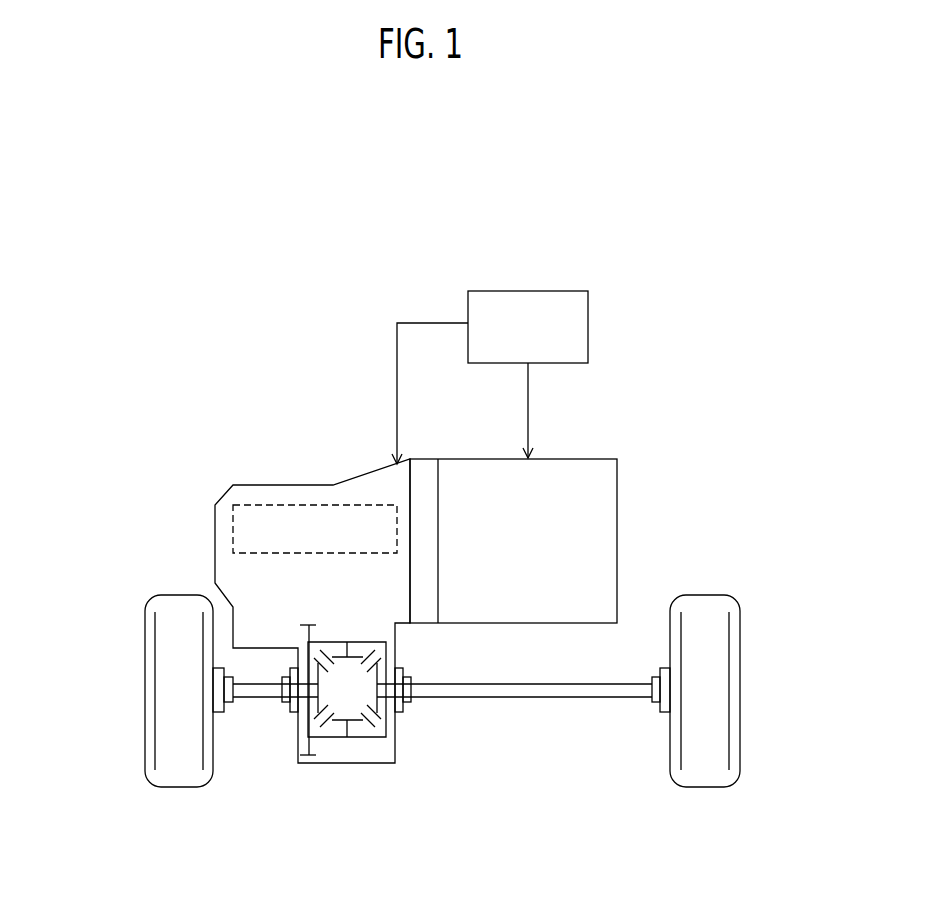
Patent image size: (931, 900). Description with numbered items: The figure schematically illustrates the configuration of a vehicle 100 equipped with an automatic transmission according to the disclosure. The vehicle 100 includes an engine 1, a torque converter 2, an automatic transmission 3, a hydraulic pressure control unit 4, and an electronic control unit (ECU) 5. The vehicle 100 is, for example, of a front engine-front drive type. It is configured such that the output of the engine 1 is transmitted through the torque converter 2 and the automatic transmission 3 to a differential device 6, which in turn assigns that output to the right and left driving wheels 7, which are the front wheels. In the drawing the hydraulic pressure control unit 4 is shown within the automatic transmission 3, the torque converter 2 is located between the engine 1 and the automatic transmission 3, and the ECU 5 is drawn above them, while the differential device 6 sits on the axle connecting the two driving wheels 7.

The vehicle 100 is at (657, 398).
The engine 1 is at (617, 492).
The torque converter 2 is at (425, 468).
The automatic transmission 3 is at (230, 567).
The hydraulic pressure control unit 4 is at (233, 528).
The electronic control unit (ECU) 5 is at (553, 291).
The differential device 6 is at (342, 747).
The driving wheels 7 is at (145, 642).